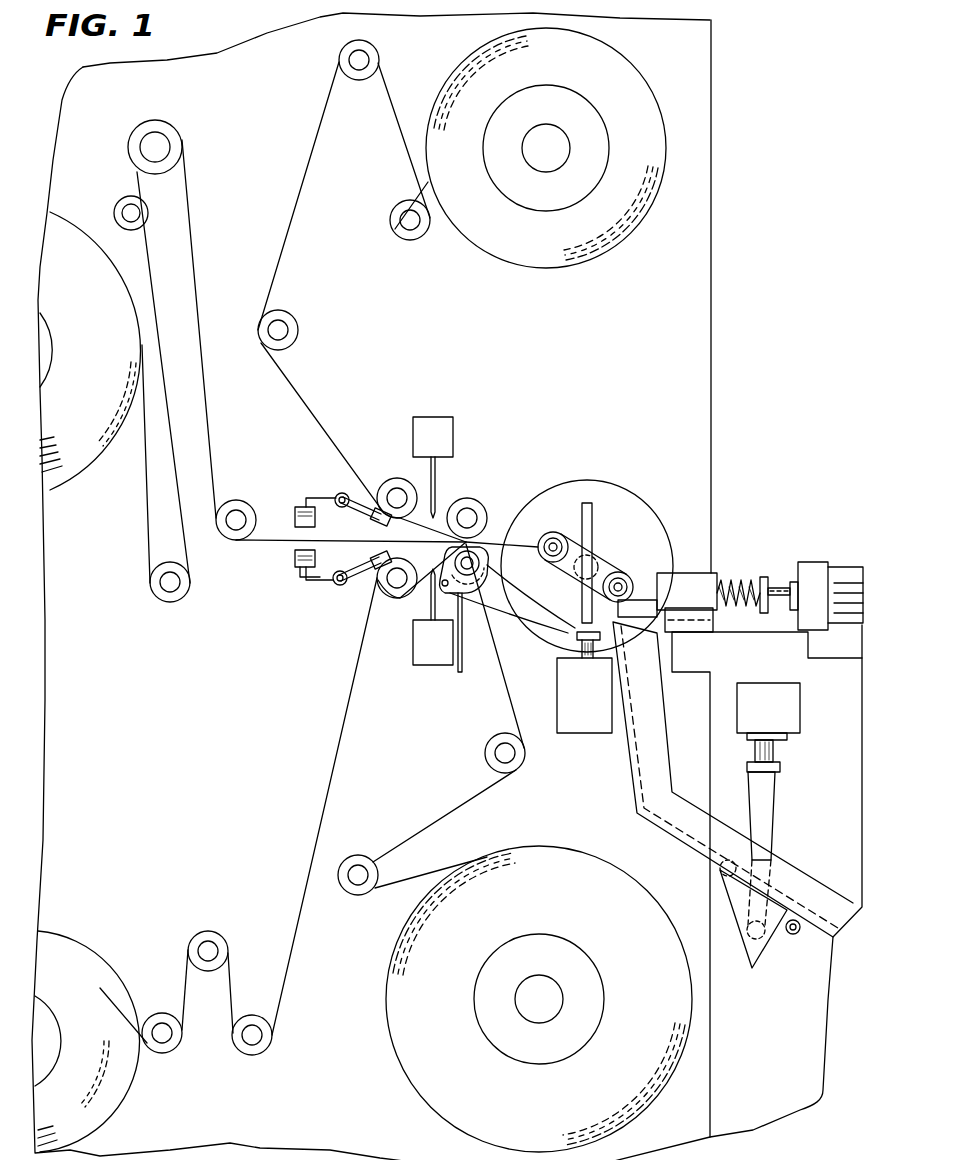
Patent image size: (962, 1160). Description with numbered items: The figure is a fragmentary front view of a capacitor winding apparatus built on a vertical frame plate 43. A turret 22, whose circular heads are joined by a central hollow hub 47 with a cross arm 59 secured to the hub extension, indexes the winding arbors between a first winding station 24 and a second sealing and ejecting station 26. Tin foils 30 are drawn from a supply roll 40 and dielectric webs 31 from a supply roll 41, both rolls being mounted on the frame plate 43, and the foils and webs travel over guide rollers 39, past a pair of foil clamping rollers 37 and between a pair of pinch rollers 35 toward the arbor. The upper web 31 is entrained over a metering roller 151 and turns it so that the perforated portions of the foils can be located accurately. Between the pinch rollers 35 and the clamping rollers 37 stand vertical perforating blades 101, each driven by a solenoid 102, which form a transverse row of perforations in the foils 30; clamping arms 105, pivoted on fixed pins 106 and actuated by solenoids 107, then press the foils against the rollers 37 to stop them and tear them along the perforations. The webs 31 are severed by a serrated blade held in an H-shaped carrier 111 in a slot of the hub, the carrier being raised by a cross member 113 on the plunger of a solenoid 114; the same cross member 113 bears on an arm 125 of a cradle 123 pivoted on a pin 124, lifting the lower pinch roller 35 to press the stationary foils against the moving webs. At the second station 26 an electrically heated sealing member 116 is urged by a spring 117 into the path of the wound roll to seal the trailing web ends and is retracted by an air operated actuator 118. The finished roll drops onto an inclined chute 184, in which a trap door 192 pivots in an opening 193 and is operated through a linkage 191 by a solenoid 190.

The turret 22 is at (594, 476).
The winding station 24 is at (553, 526).
The sealing and ejecting station 26 is at (635, 566).
The tin foils 30 is at (306, 408).
The dielectric webs 31 is at (205, 392).
The pinch rollers 35 is at (481, 506).
The foil clamping rollers 37 is at (388, 481).
The guide rollers 39 is at (407, 233).
The foil supply roll 40 is at (537, 257).
The web supply roll 41 is at (76, 466).
The vertical frame plate 43 is at (712, 357).
The central hollow hub 47 is at (578, 526).
The cross arm 59 is at (608, 567).
The perforating blades 101 is at (436, 486).
The solenoids 102 is at (437, 436).
The clamping arms 105 is at (372, 519).
The fixed pins 106 is at (340, 494).
The solenoids 107 is at (292, 530).
The H-shaped carrier 111 is at (587, 502).
The cross member 113 is at (577, 640).
The solenoid 114 is at (583, 720).
The sealing member 116 is at (650, 577).
The spring 117 is at (748, 578).
The air operated actuator 118 is at (840, 572).
The cradle 123 is at (479, 592).
The pin 124 is at (462, 647).
The arm 125 is at (542, 627).
The metering roller 151 is at (175, 138).
The inclined chute 184 is at (660, 825).
The solenoid 190 is at (793, 717).
The linkage 191 is at (763, 825).
The trap door 192 is at (783, 932).
The opening 193 is at (722, 868).